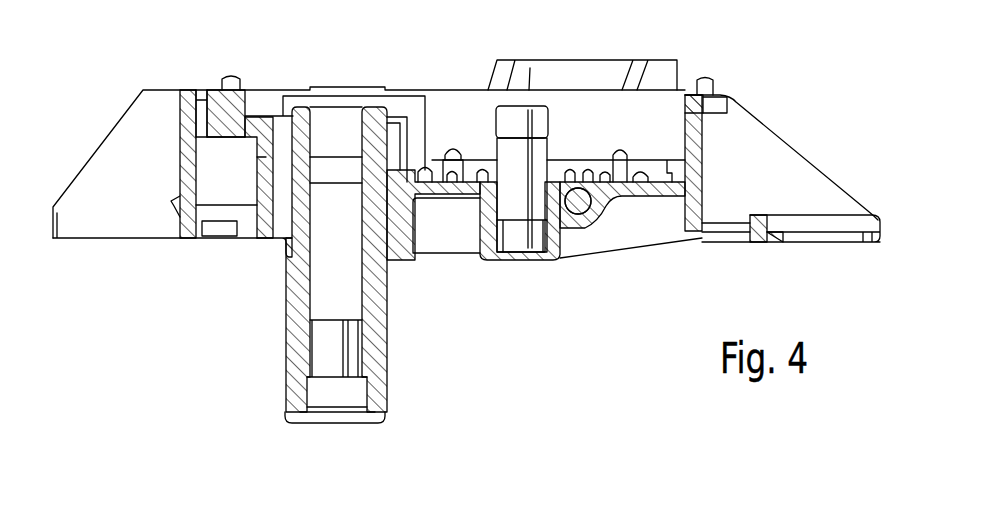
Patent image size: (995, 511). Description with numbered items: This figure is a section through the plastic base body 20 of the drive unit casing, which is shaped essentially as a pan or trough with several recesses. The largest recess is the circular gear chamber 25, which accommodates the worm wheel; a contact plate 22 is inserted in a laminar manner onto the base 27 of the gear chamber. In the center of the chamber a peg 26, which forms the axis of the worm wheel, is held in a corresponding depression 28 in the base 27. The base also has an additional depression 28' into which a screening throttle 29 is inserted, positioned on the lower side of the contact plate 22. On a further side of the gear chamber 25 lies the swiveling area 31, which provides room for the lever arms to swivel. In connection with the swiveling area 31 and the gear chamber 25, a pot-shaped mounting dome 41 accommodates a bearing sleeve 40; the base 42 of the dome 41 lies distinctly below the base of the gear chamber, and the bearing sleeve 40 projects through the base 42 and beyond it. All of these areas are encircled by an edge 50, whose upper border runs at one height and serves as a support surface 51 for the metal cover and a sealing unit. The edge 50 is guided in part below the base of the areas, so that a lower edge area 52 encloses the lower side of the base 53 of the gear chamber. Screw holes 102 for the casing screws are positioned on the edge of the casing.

The screw hole 102 is at (200, 110).
The edge 50 is at (213, 100).
The swiveling area 31 is at (247, 101).
The screening throttle 29 is at (563, 185).
The gear chamber 25 is at (683, 117).
The support surface 51 is at (690, 97).
The mounting dome 41 is at (263, 157).
The bearing sleeve 40 is at (293, 196).
The base of the mounting dome 42 is at (273, 260).
The base body 20 is at (400, 256).
The base of the gear chamber 27 is at (463, 188).
The depression 28 is at (522, 212).
The peg 26 is at (523, 207).
The additional depression 28' is at (587, 253).
The contact plate 22 is at (648, 184).
The base of the gear chamber 53 is at (657, 187).
The lower edge area 52 is at (692, 230).